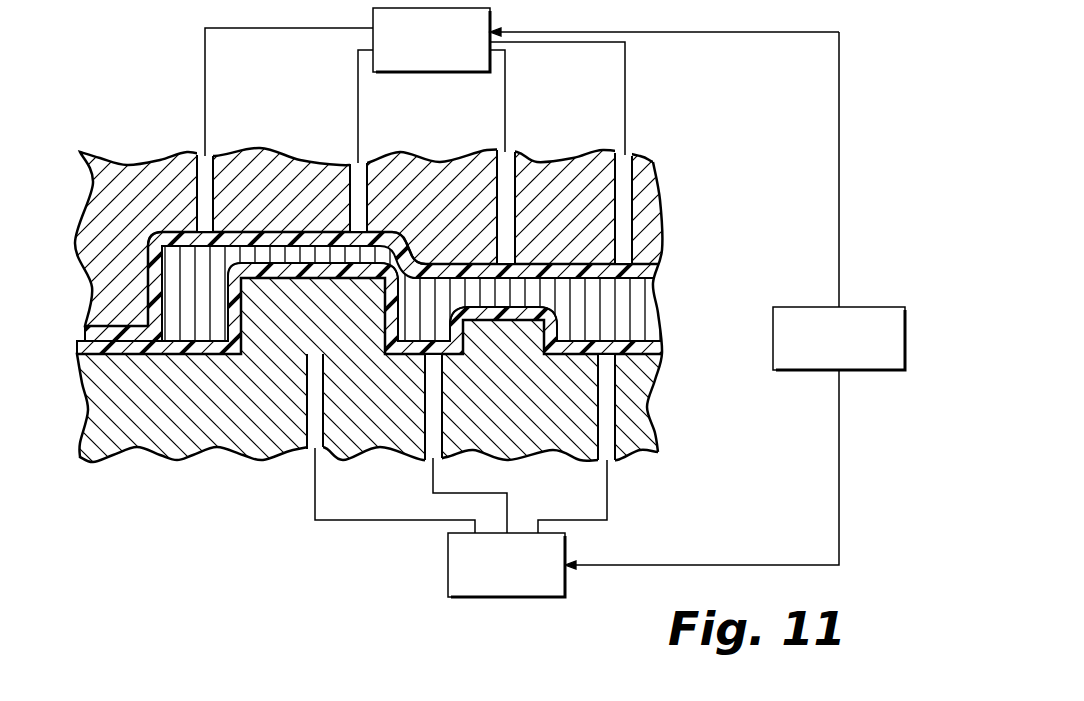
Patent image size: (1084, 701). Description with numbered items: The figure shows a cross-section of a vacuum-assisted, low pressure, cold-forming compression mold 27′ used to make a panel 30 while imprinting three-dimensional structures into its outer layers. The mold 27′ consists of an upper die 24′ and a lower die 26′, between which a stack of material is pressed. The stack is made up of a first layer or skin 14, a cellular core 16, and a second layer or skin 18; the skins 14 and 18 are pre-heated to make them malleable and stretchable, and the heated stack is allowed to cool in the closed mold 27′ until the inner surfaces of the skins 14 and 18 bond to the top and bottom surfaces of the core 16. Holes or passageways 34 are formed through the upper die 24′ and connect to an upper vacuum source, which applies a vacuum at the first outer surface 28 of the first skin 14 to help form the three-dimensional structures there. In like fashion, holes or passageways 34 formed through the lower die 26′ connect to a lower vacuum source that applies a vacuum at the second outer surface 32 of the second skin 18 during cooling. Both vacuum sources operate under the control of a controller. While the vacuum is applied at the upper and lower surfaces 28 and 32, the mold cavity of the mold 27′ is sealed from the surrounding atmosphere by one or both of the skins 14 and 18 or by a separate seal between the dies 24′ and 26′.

The first layer or skin 14 is at (652, 270).
The cellular core 16 is at (645, 308).
The second layer or skin 18 is at (660, 350).
The upper die 24′ is at (645, 212).
The lower die 26′ is at (648, 406).
The low pressure cold-forming mold 27′ is at (629, 101).
The first outer surface 28 is at (588, 262).
The panel 30 is at (720, 270).
The second outer surface 32 is at (243, 277).
The holes or passageways 34 is at (199, 207).